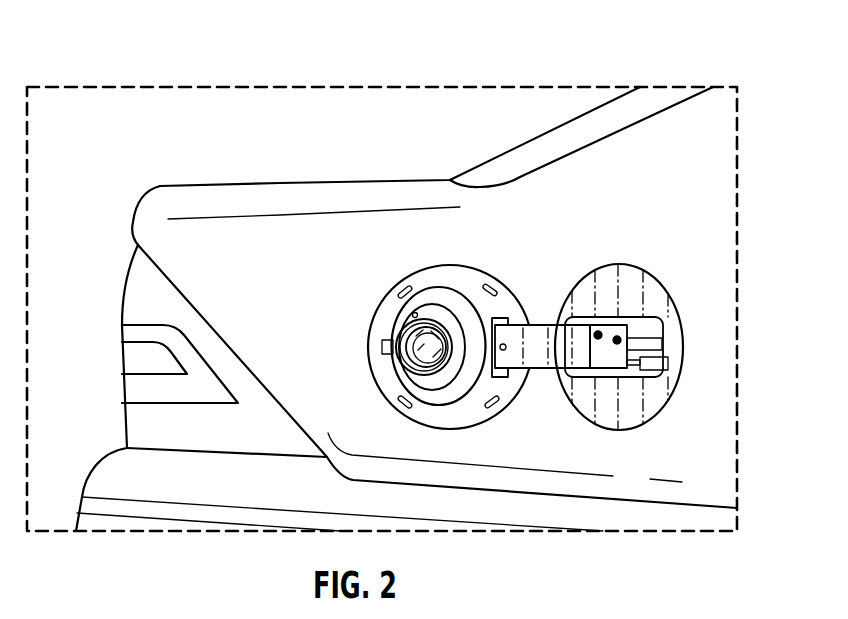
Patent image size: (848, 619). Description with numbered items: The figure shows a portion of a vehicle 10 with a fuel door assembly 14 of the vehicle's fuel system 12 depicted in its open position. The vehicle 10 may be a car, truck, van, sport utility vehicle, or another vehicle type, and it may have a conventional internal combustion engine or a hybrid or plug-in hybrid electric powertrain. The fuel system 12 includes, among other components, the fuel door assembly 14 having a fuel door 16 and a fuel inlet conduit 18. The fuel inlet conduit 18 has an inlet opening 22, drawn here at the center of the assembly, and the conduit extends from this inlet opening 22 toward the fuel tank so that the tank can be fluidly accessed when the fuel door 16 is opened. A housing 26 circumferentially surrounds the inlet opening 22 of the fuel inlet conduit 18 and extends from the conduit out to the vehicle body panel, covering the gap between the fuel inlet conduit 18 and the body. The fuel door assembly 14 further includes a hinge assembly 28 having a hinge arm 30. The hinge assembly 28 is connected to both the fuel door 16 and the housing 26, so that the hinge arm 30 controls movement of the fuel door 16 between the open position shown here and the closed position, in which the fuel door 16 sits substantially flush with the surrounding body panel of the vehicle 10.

The vehicle 10 is at (715, 50).
The fuel system 12 is at (463, 258).
The fuel door assembly 14 is at (406, 426).
The fuel door 16 is at (637, 282).
The fuel inlet conduit 18 is at (396, 323).
The inlet opening 22 is at (422, 352).
The housing 26 is at (474, 388).
The hinge assembly 28 is at (515, 321).
The hinge arm 30 is at (542, 360).